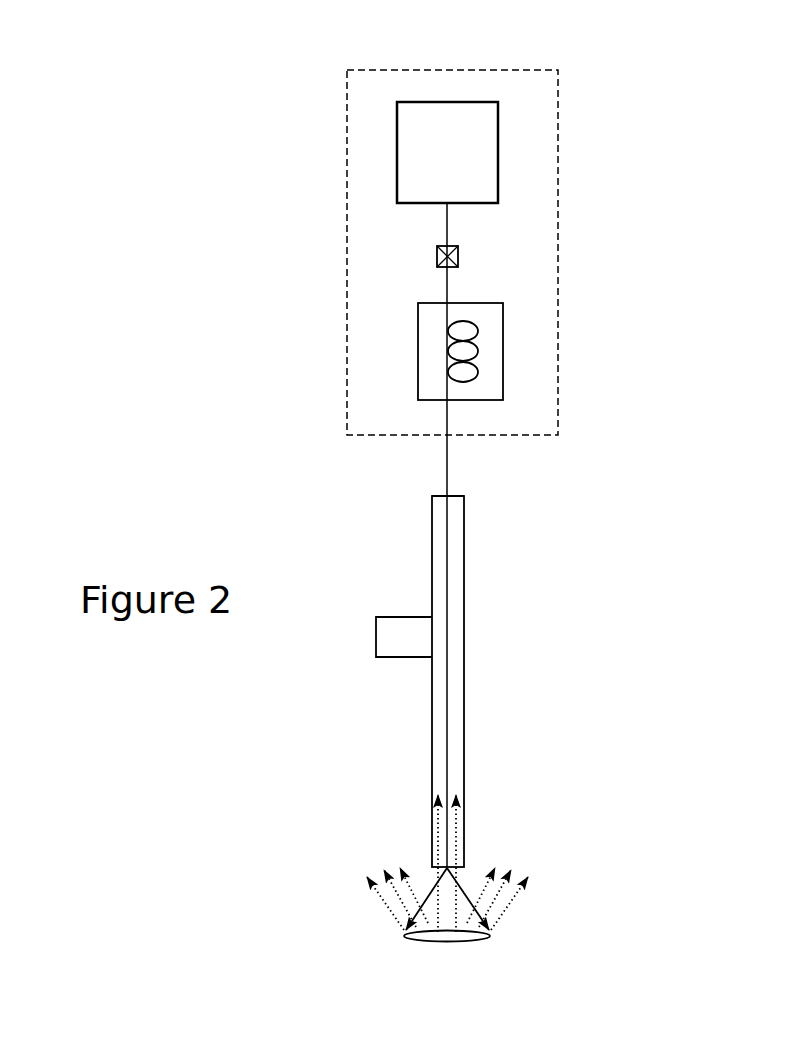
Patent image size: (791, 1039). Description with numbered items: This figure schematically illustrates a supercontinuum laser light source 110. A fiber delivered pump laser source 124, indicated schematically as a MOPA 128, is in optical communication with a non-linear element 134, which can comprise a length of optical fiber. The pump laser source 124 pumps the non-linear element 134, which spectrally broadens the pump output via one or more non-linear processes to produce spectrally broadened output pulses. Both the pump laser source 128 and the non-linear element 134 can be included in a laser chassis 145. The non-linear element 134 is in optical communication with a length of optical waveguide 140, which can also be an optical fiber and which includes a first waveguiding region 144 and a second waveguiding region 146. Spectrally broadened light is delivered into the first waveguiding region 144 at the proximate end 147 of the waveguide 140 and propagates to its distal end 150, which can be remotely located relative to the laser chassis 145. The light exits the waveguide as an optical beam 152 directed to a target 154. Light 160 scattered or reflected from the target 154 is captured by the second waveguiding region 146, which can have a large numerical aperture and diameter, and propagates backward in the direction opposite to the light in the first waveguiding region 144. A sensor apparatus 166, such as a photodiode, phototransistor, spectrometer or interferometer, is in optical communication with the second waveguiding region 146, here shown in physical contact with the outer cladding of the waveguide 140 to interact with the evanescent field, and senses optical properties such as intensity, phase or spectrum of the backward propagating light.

The supercontinuum laser light source 110 is at (205, 318).
The fiber delivered pump laser source 124 is at (480, 93).
The MOPA 128 is at (482, 168).
The non-linear element 134 is at (516, 343).
The laser chassis 145 is at (445, 70).
The length of optical waveguide 140 is at (484, 655).
The first waveguiding region 144 is at (447, 594).
The second waveguiding region 146 is at (453, 751).
The proximate end 147 is at (440, 496).
The sensor apparatus 166 is at (393, 640).
The distal end 150 is at (472, 862).
The optical beam 152 is at (430, 890).
The target 154 is at (447, 941).
The scattered light 160 is at (360, 878).